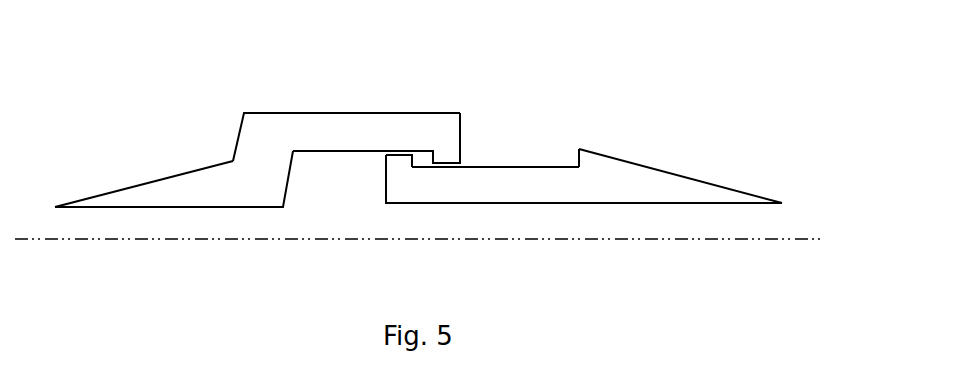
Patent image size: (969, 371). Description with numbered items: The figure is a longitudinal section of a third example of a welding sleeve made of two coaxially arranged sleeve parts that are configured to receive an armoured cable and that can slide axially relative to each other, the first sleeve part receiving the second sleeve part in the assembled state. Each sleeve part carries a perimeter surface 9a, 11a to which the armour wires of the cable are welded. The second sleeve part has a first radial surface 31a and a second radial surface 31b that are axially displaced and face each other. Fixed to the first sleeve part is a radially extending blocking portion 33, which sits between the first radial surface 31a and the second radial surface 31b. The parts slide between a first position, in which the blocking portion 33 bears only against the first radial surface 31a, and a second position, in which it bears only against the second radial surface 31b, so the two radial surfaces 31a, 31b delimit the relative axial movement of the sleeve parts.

The perimeter surface 9a is at (128, 187).
The perimeter surface 11a is at (680, 177).
The first radial surface 31a is at (412, 156).
The second radial surface 31b is at (579, 150).
The radially extending blocking portion 33 is at (431, 156).